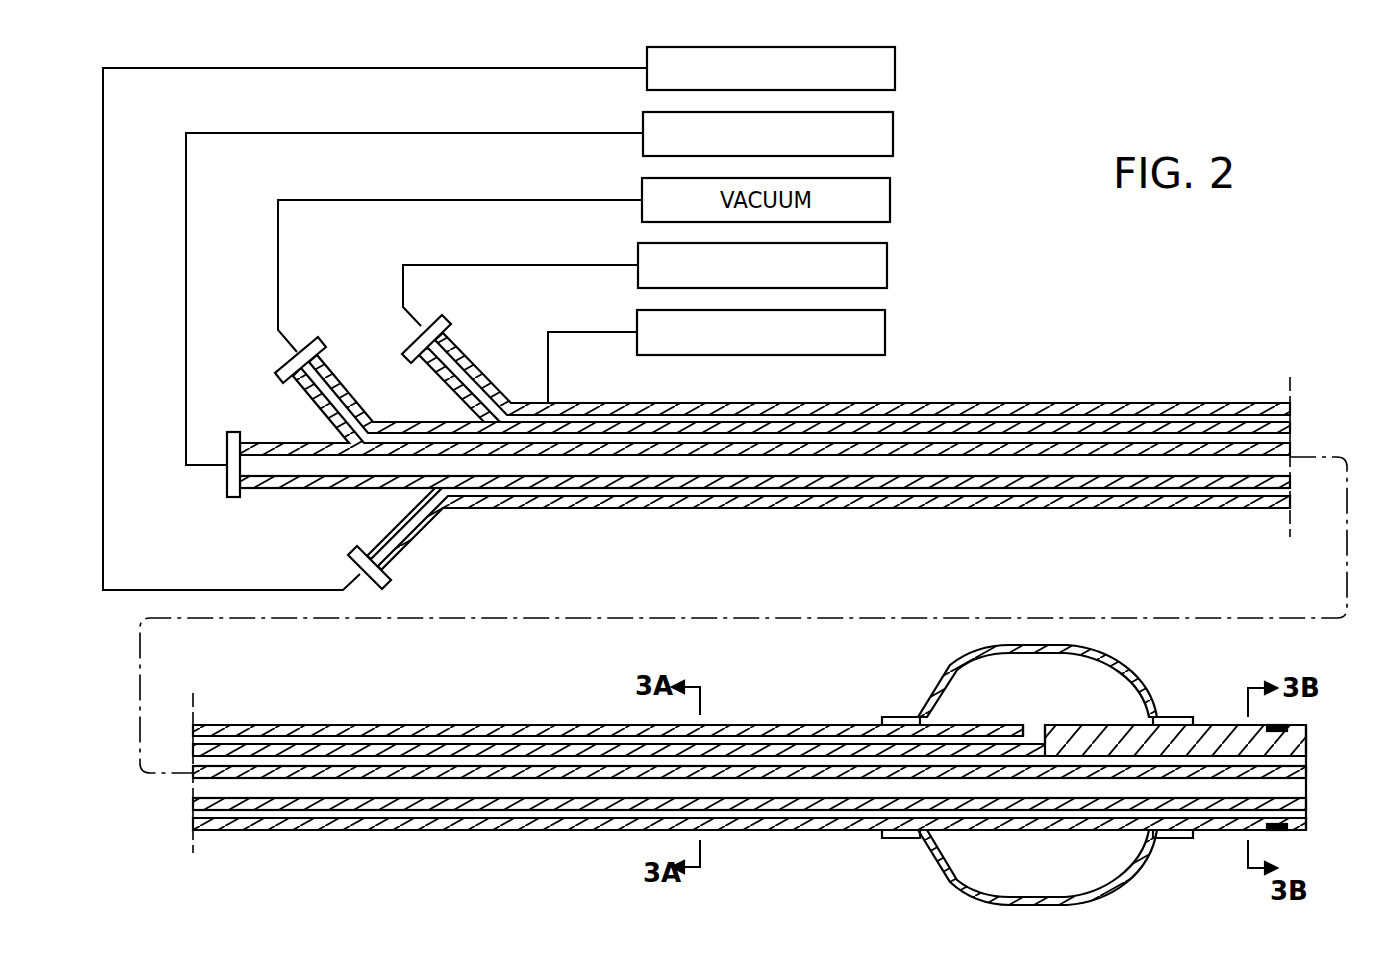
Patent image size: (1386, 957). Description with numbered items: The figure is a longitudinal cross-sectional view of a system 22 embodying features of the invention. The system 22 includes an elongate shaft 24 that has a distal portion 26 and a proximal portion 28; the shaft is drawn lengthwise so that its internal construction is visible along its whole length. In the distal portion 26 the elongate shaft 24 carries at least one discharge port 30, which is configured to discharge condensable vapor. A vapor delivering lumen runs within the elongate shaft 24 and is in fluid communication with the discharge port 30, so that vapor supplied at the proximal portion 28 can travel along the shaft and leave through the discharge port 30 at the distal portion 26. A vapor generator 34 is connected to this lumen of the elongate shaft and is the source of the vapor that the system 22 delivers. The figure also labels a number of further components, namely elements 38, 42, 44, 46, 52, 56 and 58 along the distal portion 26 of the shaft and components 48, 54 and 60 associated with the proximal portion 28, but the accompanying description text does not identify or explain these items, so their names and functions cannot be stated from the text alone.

The system 22 is at (1130, 331).
The elongate shaft 24 is at (268, 723).
The distal portion 26 is at (1213, 724).
The proximal portion 28 is at (577, 500).
The discharge port 30 is at (1307, 788).
The vapor generator 34 is at (893, 146).
The distal plug 38 is at (1307, 762).
The vapor outlet port 42 is at (1035, 728).
The balloon 44 is at (955, 855).
The balloon wall 46 is at (1150, 858).
The inflation device 48 is at (887, 278).
The outer lumen 52 is at (1307, 812).
The relief valve 54 is at (895, 80).
The marker band 56 is at (1280, 728).
The marker band 58 is at (1285, 830).
The pressure gauge 60 is at (885, 346).